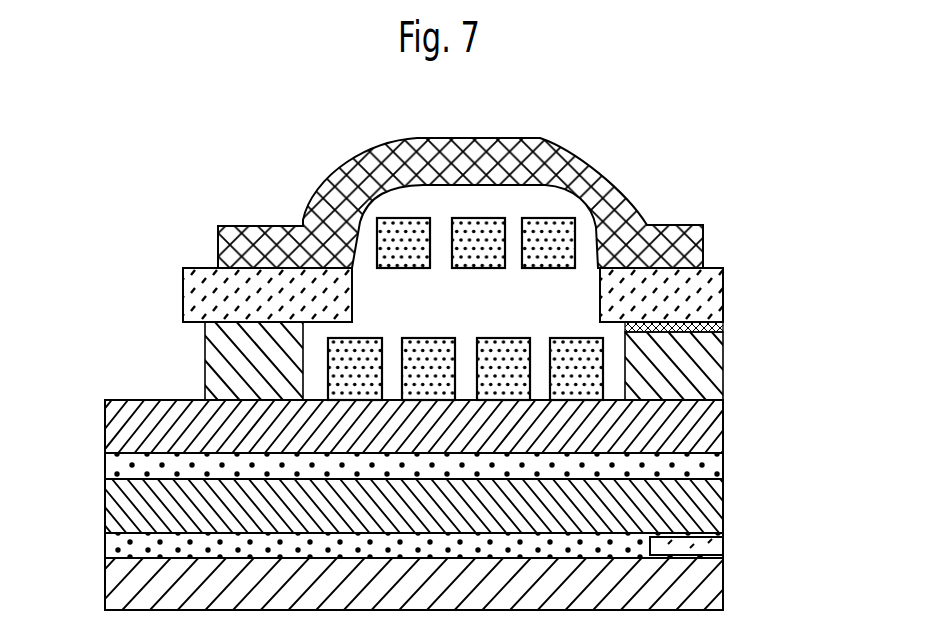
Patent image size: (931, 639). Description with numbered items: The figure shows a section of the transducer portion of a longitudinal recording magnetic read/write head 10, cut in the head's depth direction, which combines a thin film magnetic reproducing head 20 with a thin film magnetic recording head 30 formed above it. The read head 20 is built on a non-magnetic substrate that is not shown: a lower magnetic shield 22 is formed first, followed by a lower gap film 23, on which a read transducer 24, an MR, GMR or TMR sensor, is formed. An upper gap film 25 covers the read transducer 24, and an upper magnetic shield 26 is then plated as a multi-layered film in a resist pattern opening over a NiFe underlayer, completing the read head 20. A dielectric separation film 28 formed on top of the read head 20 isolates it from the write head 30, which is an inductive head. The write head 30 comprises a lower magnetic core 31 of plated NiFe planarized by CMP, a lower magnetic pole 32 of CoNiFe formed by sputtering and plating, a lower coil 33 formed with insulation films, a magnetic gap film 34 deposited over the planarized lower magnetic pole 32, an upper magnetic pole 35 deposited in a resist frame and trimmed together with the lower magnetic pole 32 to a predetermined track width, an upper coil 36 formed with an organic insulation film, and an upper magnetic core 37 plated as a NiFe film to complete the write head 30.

The longitudinal recording magnetic read/write head 10 is at (622, 139).
The thin film magnetic reproducing head 20 is at (827, 480).
The lower magnetic shield 22 is at (710, 587).
The lower gap film 23 is at (710, 557).
The read transducer 24 is at (707, 545).
The upper gap film 25 is at (713, 535).
The upper magnetic shield 26 is at (707, 508).
The dielectric separation film 28 is at (710, 467).
The thin film magnetic recording head 30 is at (827, 188).
The lower magnetic core 31 is at (710, 413).
The lower magnetic pole 32 is at (703, 378).
The lower coil 33 is at (577, 367).
The magnetic gap film 34 is at (723, 324).
The upper magnetic pole 35 is at (703, 293).
The upper coil 36 is at (550, 243).
The upper magnetic core 37 is at (690, 246).